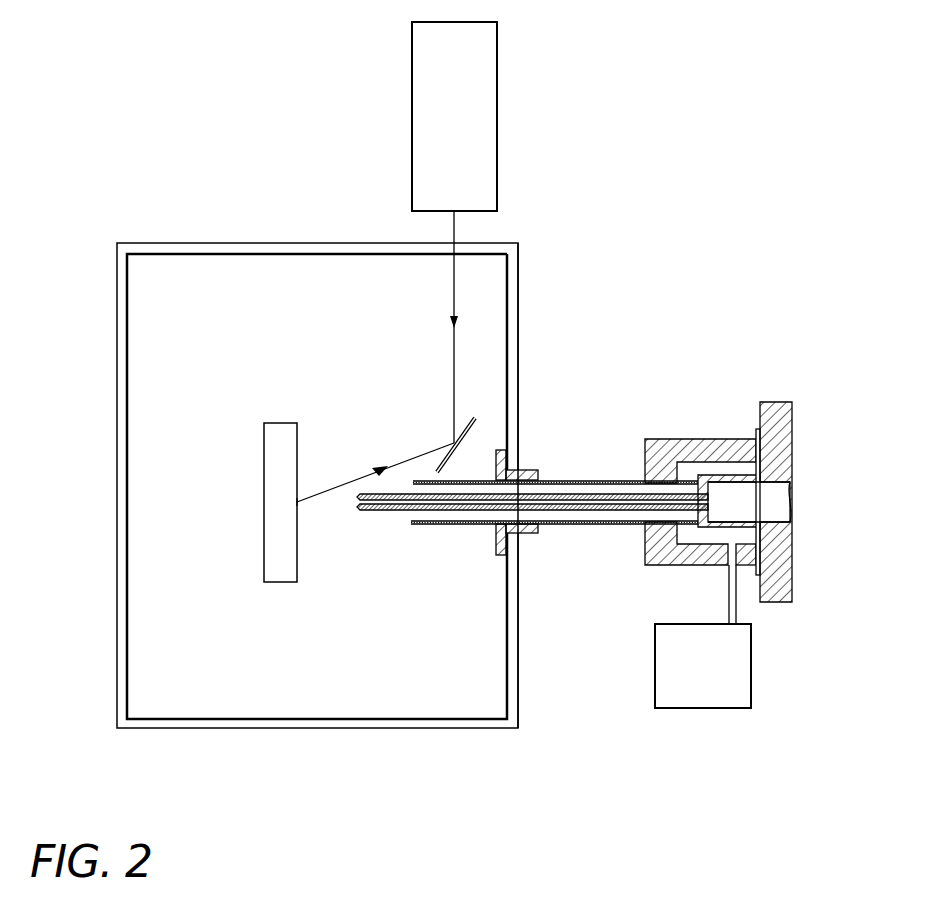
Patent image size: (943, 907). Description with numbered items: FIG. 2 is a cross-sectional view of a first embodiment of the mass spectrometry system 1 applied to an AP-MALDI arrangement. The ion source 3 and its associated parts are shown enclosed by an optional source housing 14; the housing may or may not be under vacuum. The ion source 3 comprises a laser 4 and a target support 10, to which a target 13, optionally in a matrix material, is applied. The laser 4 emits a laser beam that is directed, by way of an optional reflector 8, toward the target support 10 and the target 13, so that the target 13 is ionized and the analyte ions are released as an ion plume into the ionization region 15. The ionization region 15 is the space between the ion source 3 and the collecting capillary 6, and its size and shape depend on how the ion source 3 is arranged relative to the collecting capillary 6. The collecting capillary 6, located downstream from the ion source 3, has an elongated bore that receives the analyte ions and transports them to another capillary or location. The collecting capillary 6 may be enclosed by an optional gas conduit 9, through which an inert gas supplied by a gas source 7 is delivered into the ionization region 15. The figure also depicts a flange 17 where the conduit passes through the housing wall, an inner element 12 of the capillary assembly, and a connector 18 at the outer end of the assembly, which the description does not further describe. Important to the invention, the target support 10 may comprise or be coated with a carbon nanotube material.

The mass spectrometry system 1 is at (203, 65).
The ion source 3 is at (353, 485).
The laser 4 is at (495, 106).
The collecting capillary 6 is at (588, 513).
The gas source 7 is at (750, 663).
The reflector 8 is at (472, 422).
The gas conduit 9 is at (565, 481).
The target support 10 is at (281, 423).
The inner electrode of coaxial probe 12 is at (612, 498).
The target 13 is at (300, 500).
The source housing 14 is at (519, 302).
The ionization region 15 is at (328, 540).
The flange 17 is at (532, 534).
The connector 18 is at (792, 498).